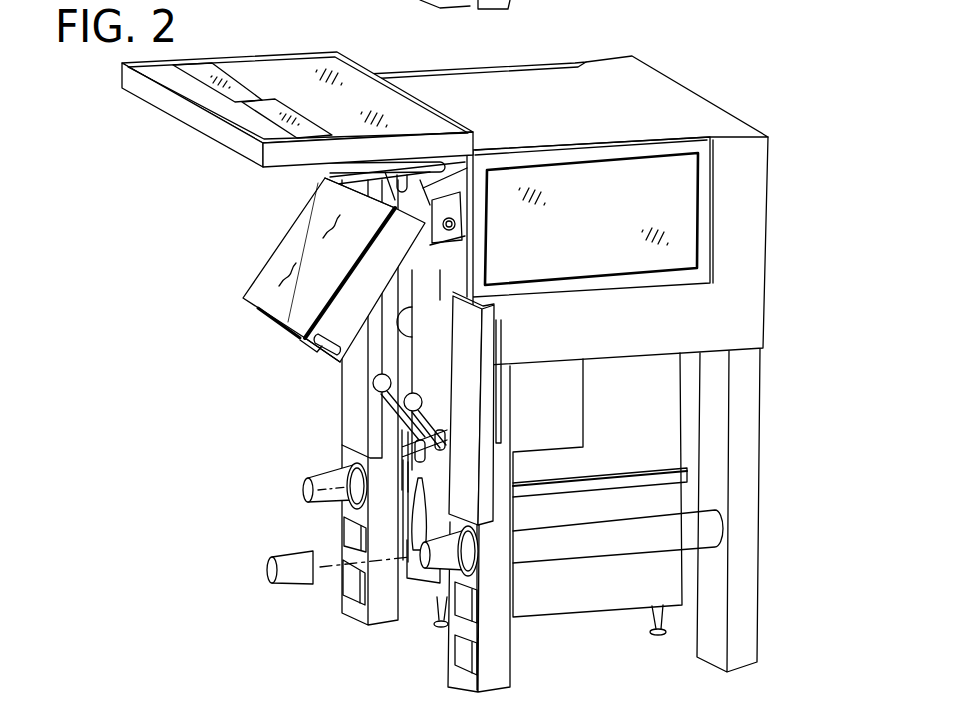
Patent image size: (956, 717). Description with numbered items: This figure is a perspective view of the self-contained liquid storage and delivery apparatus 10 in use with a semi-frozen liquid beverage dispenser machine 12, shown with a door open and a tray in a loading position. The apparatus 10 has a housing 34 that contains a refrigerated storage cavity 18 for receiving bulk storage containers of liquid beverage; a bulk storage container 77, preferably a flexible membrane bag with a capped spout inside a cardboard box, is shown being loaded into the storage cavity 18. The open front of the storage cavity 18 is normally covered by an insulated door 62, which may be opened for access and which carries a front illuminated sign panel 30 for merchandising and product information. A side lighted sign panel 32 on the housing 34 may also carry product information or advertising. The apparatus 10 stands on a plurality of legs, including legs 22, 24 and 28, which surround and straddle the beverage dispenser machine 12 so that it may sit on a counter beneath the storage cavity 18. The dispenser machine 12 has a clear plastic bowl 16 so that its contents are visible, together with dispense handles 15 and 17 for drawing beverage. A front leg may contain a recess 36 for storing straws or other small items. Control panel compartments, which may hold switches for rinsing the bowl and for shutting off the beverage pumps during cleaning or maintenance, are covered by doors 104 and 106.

The self-contained liquid storage and delivery apparatus 10 is at (243, 322).
The semi-frozen liquid beverage dispenser machine 12 is at (592, 585).
The dispense handle 15 is at (374, 382).
The clear plastic bowl 16 is at (655, 428).
The dispense handle 17 is at (406, 405).
The refrigerated storage cavity 18 is at (258, 199).
The leg 22 is at (340, 607).
The leg 24 is at (465, 683).
The leg 28 is at (743, 623).
The front illuminated sign panel 30 is at (340, 70).
The side lighted sign panel 32 is at (652, 180).
The housing 34 is at (737, 292).
The recess 36 is at (465, 598).
The insulated door 62 is at (178, 107).
The bulk storage container 77 is at (334, 270).
The door 104 is at (355, 365).
The door 106 is at (472, 373).